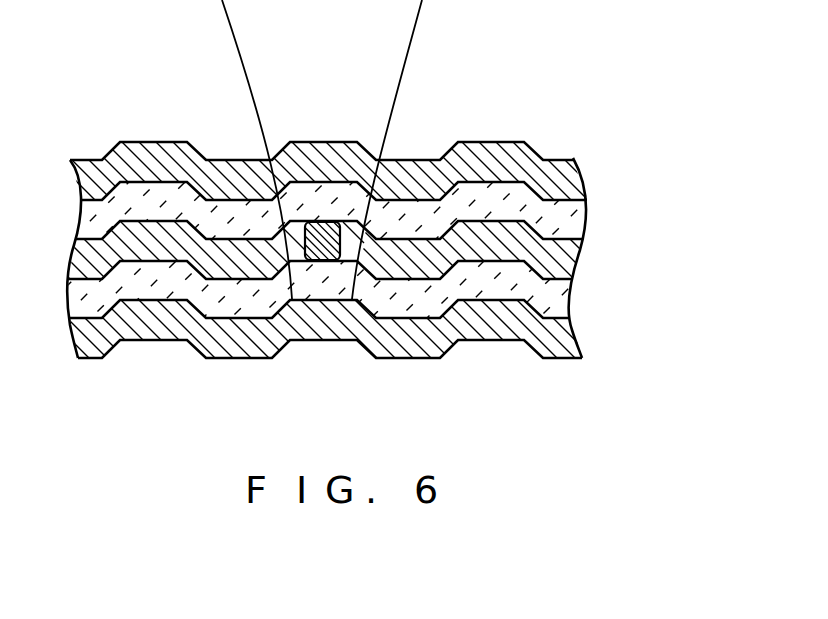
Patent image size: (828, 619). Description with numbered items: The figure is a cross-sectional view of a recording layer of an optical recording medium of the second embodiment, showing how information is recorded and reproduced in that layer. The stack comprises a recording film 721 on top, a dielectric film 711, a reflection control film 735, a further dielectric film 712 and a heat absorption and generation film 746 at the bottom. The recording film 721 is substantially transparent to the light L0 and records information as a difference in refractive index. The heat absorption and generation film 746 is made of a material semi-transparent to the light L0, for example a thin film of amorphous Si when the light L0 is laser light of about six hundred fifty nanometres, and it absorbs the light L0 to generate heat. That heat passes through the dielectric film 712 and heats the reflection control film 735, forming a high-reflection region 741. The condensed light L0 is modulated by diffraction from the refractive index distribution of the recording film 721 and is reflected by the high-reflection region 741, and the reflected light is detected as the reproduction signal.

The recording film 721 is at (576, 162).
The dielectric film 711 is at (585, 207).
The reflection control film 735 is at (578, 251).
The dielectric film 712 is at (571, 292).
The heat absorption and generation film 746 is at (574, 333).
The high-reflection region 741 is at (335, 261).
The light L0 is at (400, 43).